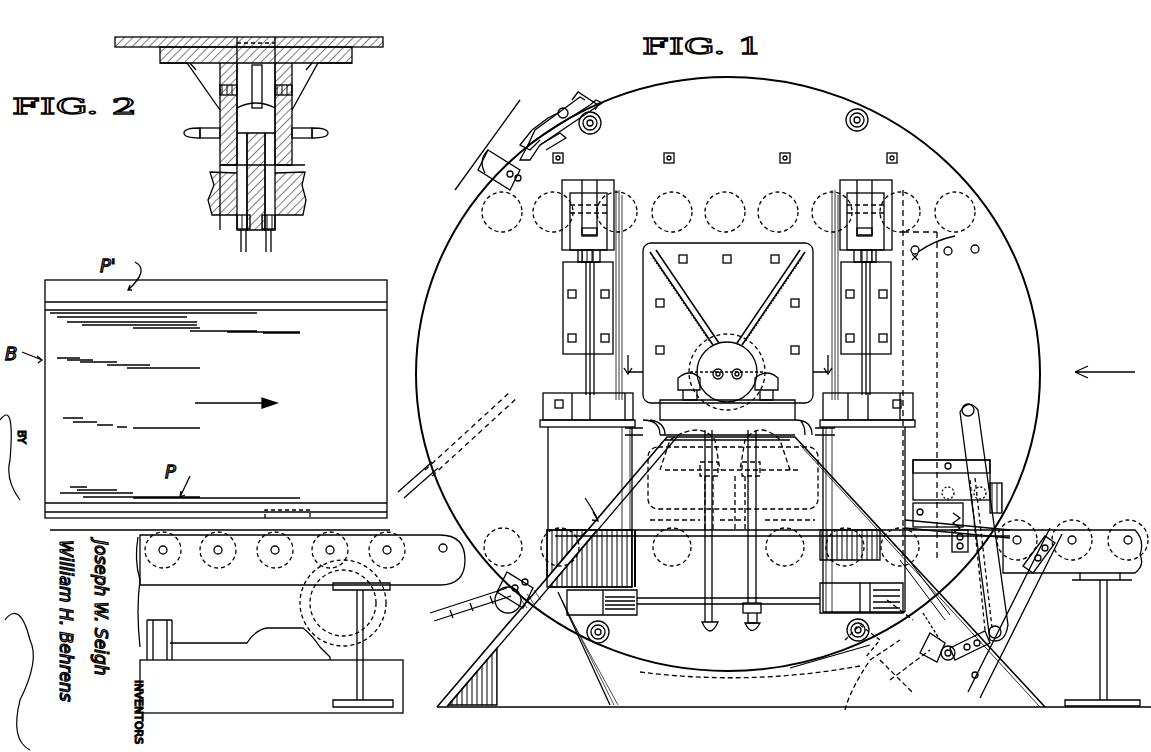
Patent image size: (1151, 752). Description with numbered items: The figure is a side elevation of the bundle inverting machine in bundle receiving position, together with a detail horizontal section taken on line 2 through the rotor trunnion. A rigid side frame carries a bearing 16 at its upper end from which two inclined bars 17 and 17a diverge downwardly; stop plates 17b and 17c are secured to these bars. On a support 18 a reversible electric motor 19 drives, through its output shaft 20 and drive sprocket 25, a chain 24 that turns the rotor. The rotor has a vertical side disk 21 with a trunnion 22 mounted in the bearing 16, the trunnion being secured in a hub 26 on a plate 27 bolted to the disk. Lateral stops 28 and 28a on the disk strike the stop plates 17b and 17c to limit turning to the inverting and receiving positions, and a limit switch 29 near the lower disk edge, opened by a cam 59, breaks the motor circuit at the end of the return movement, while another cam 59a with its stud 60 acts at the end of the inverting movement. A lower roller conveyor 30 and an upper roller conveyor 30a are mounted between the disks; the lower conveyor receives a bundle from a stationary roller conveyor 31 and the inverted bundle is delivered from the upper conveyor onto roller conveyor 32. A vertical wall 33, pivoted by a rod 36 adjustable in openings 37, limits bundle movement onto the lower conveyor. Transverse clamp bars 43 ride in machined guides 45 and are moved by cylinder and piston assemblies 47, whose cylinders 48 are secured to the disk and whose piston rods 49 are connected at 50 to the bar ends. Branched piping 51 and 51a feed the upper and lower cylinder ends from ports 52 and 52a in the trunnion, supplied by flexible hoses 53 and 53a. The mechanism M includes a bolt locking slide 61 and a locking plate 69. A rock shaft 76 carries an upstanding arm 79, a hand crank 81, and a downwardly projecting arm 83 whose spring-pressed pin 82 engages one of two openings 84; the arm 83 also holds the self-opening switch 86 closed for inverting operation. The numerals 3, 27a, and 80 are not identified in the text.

In FIG. 1, the section line 2 is at (728, 355).
In FIG. 1, the direction of rotation arrow 3 is at (1105, 373).
In FIG. 2, the bearing 16 is at (305, 192).
In FIG. 1, the bearing 16 is at (715, 355).
In FIG. 1, the inclined bar 17 is at (620, 480).
In FIG. 1, the inclined bar 17a is at (890, 458).
In FIG. 1, the stop plate 17b is at (970, 560).
In FIG. 1, the stop plate 17c is at (500, 632).
In FIG. 1, the support 18 is at (285, 695).
In FIG. 1, the reversible electric motor 19 is at (243, 641).
In FIG. 1, the output shaft 20 is at (346, 633).
In FIG. 2, the side disk 21 is at (180, 37).
In FIG. 1, the side disk 21 is at (495, 187).
In FIG. 2, the trunnion 22 is at (250, 50).
In FIG. 1, the trunnion 22 is at (728, 350).
In FIG. 1, the chain 24 is at (457, 449).
In FIG. 1, the drive sprocket 25 is at (312, 598).
In FIG. 2, the hub 26 is at (292, 100).
In FIG. 2, the plate 27 is at (352, 55).
In FIG. 1, the plate 27 is at (712, 248).
In FIG. 1, the bracket 27a is at (535, 140).
In FIG. 1, the lateral stop 28 is at (490, 152).
In FIG. 1, the lateral stop 28a is at (500, 612).
In FIG. 1, the limit switch 29 is at (865, 688).
In FIG. 1, the lower roller conveyor 30 is at (691, 569).
In FIG. 1, the upper roller conveyor 30a is at (749, 197).
In FIG. 1, the roller conveyor 31 is at (208, 580).
In FIG. 1, the roller conveyor 32 is at (1102, 527).
In FIG. 1, the vertical wall 33 is at (944, 332).
In FIG. 1, the rod 36 is at (916, 246).
In FIG. 1, the openings 37 is at (948, 241).
In FIG. 1, the clamp bar 43 is at (590, 184).
In FIG. 1, the machined guide 45 is at (600, 272).
In FIG. 1, the cylinder and piston assembly 47 is at (536, 454).
In FIG. 1, the cylinder 48 is at (548, 470).
In FIG. 1, the piston rod 49 is at (585, 368).
In FIG. 1, the connection 50 is at (600, 210).
In FIG. 2, the branched piping 51 is at (330, 130).
In FIG. 1, the branched piping 51 is at (778, 386).
In FIG. 2, the branched piping 51a is at (185, 134).
In FIG. 1, the branched piping 51a is at (676, 386).
In FIG. 2, the port 52 is at (275, 148).
In FIG. 2, the port 52a is at (237, 150).
In FIG. 2, the flexible hose 53 is at (270, 248).
In FIG. 1, the flexible hose 53 is at (745, 370).
In FIG. 2, the flexible hose 53a is at (240, 248).
In FIG. 1, the flexible hose 53a is at (712, 370).
In FIG. 1, the cam 59 is at (850, 655).
In FIG. 1, the cam 59a is at (575, 98).
In FIG. 1, the stud 60 is at (560, 110).
In FIG. 1, the bolt locking slide 61 is at (1005, 495).
In FIG. 1, the locking plate 69 is at (940, 490).
In FIG. 1, the rock shaft 76 is at (1002, 632).
In FIG. 1, the upstanding arm 79 is at (1025, 590).
In FIG. 1, the link 80 is at (1040, 545).
In FIG. 1, the hand crank 81 is at (978, 418).
In FIG. 1, the spring-pressed pin 82 is at (953, 670).
In FIG. 1, the downwardly projecting arm 83 is at (975, 652).
In FIG. 1, the openings 84 is at (977, 677).
In FIG. 1, the switch 86 is at (932, 670).
In FIG. 1, the mechanism M is at (1014, 464).